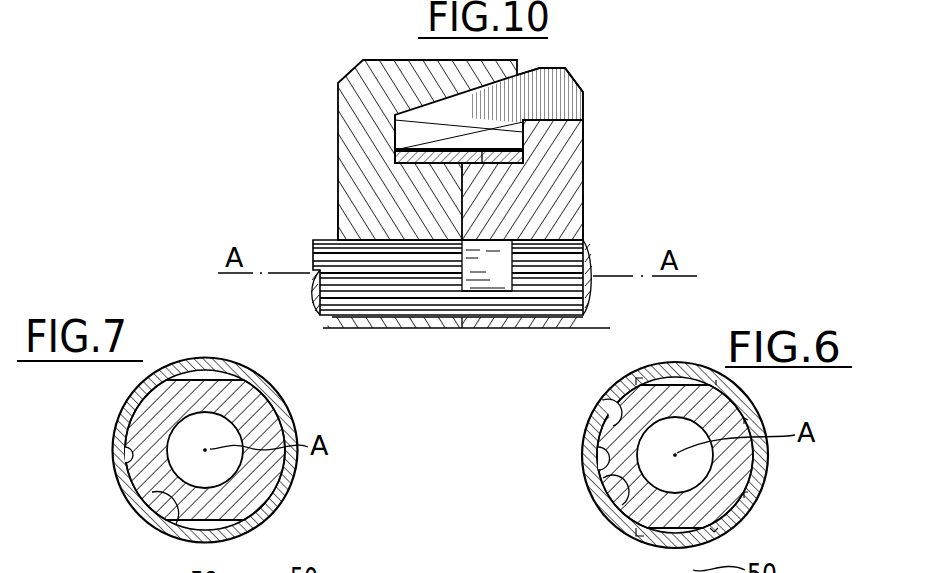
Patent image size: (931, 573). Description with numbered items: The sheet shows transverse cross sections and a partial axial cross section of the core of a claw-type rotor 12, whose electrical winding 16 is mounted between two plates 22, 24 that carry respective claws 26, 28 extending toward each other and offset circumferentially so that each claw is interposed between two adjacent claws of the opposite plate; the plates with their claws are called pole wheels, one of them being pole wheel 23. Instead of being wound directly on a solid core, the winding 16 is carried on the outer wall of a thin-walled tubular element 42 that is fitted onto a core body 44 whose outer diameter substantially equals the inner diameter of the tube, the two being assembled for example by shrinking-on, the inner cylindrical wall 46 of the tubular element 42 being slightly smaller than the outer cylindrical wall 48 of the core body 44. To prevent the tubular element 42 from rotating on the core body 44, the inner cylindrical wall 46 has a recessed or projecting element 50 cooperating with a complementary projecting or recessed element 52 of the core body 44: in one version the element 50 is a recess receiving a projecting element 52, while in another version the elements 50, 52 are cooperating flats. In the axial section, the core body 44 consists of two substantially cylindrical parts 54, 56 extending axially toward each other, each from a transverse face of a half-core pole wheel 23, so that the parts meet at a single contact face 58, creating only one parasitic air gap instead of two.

In FIG. 10, the rotor 12 is at (665, 131).
In FIG. 10, the electrical winding 16 is at (452, 111).
In FIG. 10, the plate 22 is at (563, 178).
In FIG. 10, the pole wheel 23 is at (585, 158).
In FIG. 10, the plate 24 is at (350, 205).
In FIG. 10, the claw 26 is at (563, 72).
In FIG. 10, the claw 28 is at (398, 72).
In FIG. 10, the tubular element 42 is at (397, 143).
In FIG. 7, the tubular element 42 is at (117, 440).
In FIG. 6, the tubular element 42 is at (760, 462).
In FIG. 10, the core body 44 is at (478, 348).
In FIG. 7, the core body 44 is at (272, 418).
In FIG. 6, the core body 44 is at (618, 478).
In FIG. 10, the inner cylindrical wall 46 is at (487, 163).
In FIG. 7, the inner cylindrical wall 46 is at (132, 453).
In FIG. 6, the inner cylindrical wall 46 is at (600, 453).
In FIG. 10, the outer cylindrical wall 48 is at (482, 150).
In FIG. 7, the recessed or projecting element 50 is at (190, 540).
In FIG. 6, the recessed or projecting element 50 is at (615, 392).
In FIG. 7, the complementary projecting or recessed element 52 is at (152, 492).
In FIG. 6, the complementary projecting or recessed element 52 is at (602, 427).
In FIG. 10, the cylindrical part 54 is at (583, 210).
In FIG. 10, the cylindrical part 56 is at (443, 215).
In FIG. 10, the contact face 58 is at (398, 183).